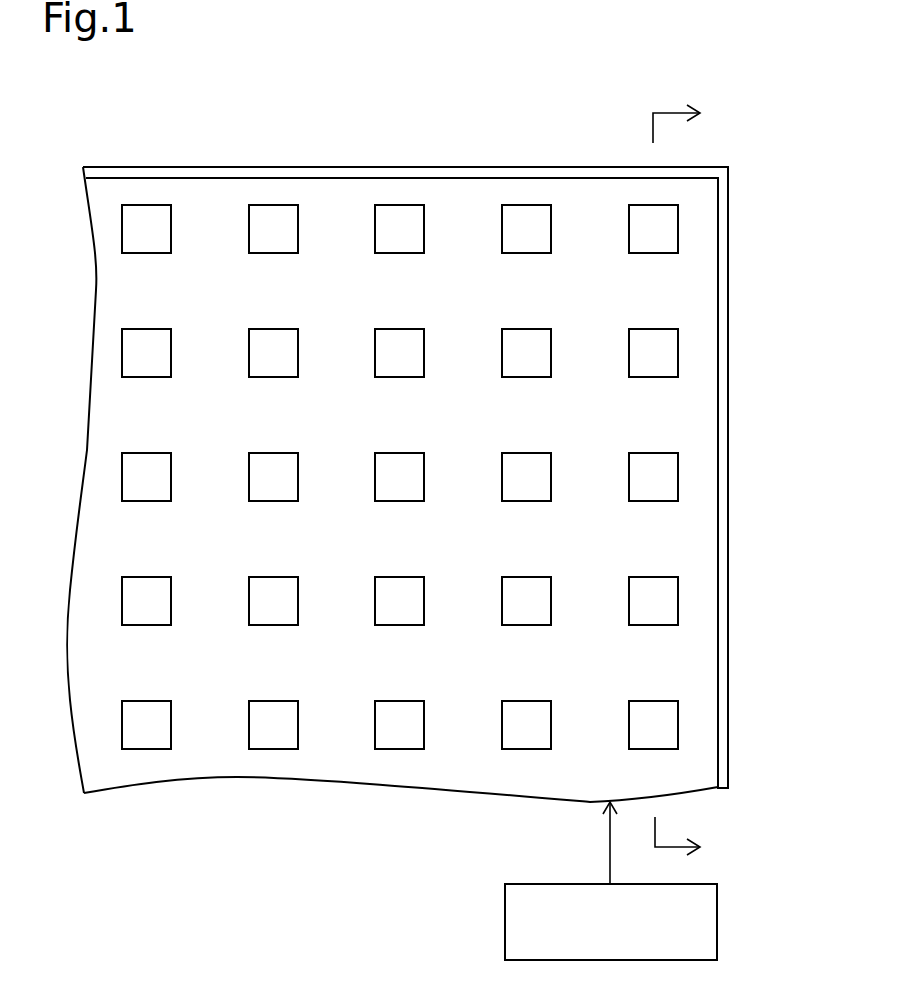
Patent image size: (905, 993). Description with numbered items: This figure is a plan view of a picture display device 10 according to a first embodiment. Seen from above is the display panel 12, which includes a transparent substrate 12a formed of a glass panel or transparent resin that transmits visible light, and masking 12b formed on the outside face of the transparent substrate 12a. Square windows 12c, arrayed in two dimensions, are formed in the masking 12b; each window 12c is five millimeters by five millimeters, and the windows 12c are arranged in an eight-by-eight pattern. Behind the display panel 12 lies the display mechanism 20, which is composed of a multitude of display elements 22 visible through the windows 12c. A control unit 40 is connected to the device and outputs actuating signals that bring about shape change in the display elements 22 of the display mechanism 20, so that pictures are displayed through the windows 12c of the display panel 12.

The picture display device 10 is at (449, 78).
The display panel 12 is at (795, 218).
The transparent substrate 12a is at (663, 233).
The masking 12b is at (663, 290).
The windows 12c is at (538, 225).
The display elements 22 is at (659, 481).
The display mechanism 20 is at (752, 477).
The control unit 40 is at (717, 922).